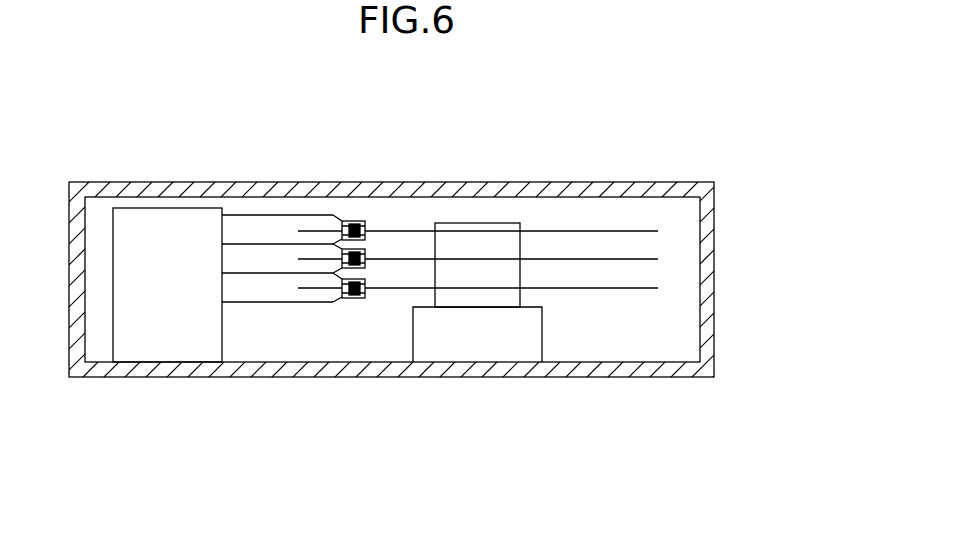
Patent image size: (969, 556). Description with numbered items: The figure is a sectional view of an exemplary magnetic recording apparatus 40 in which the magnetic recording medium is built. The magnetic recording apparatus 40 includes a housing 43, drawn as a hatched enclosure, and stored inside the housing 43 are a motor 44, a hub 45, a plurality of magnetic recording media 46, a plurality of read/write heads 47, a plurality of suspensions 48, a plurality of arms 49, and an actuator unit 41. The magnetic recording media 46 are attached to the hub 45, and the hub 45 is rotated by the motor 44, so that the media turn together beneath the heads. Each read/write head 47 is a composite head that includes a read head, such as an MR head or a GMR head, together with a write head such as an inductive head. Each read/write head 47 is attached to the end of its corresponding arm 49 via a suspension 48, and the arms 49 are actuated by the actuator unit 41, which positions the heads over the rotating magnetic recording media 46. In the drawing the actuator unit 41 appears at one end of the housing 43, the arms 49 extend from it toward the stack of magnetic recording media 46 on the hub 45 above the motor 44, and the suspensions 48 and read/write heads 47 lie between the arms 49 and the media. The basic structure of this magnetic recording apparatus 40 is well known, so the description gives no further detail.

The magnetic recording apparatus 40 is at (658, 156).
The actuator unit 41 is at (172, 353).
The housing 43 is at (707, 337).
The motor 44 is at (479, 353).
The hub 45 is at (473, 223).
The magnetic recording media 46 is at (602, 232).
The read/write heads 47 is at (368, 221).
The suspensions 48 is at (333, 215).
The arms 49 is at (245, 214).